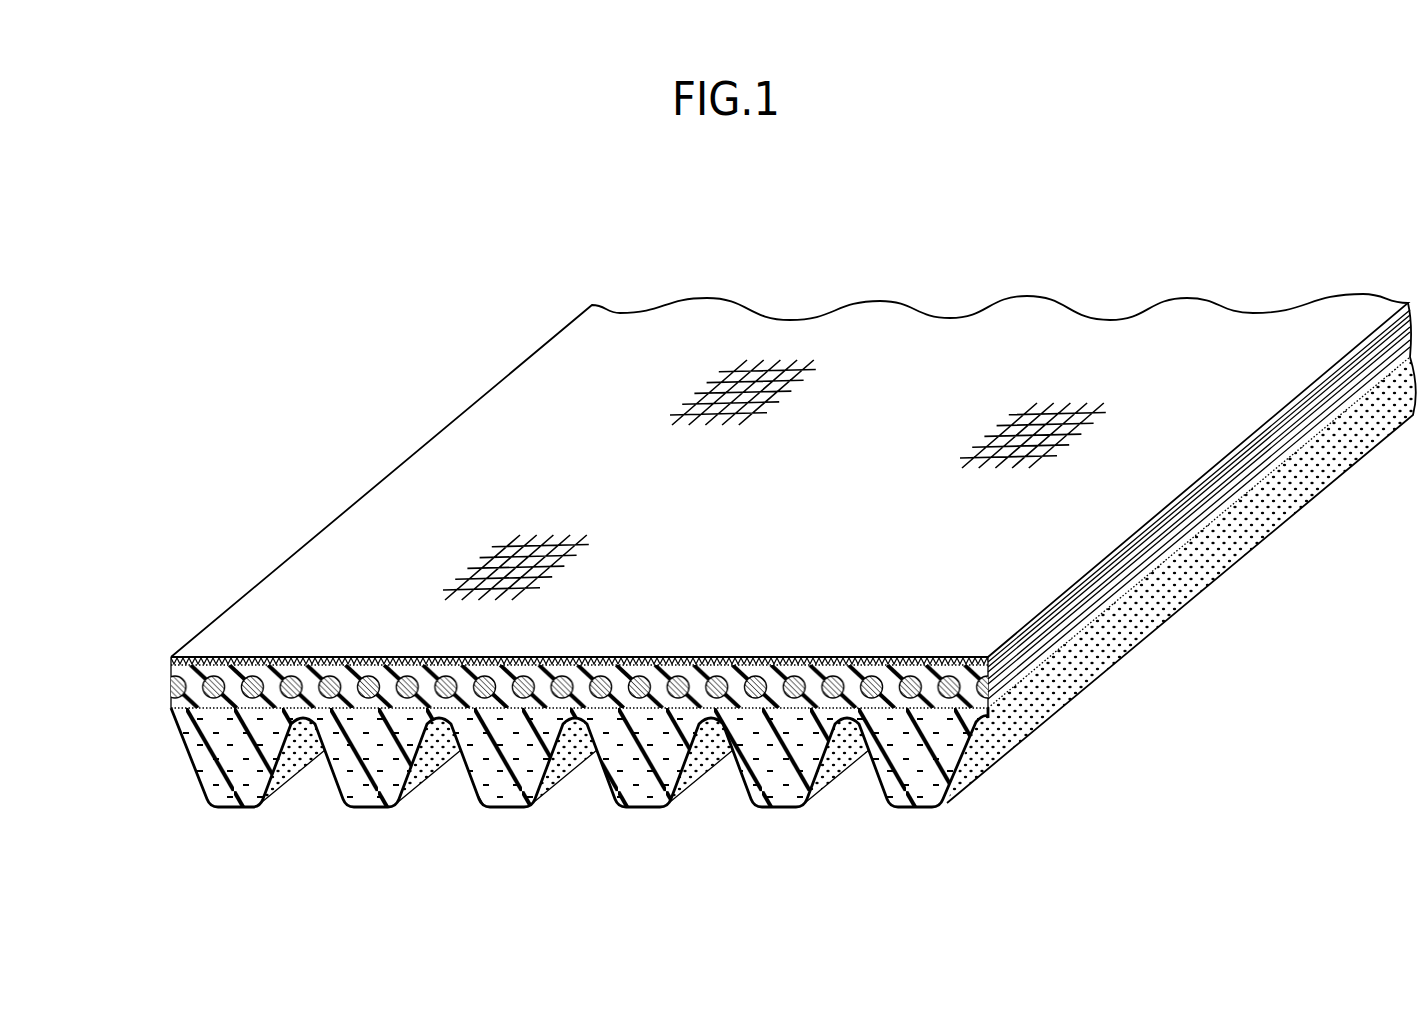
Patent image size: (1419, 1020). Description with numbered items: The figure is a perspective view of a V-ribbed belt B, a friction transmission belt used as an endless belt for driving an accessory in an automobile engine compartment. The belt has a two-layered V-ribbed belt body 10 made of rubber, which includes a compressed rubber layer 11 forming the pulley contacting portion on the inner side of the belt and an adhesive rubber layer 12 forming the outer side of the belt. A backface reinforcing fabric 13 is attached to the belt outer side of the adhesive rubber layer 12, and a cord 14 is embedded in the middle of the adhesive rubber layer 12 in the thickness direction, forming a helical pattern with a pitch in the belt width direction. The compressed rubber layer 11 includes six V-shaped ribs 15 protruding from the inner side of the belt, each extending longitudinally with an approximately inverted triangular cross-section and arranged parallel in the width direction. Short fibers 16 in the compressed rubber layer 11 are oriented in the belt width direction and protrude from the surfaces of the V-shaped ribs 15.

The V-ribbed belt B is at (603, 229).
The V-ribbed belt body 10 is at (108, 667).
The compressed rubber layer 11 is at (194, 751).
The adhesive rubber layer 12 is at (172, 701).
The backface reinforcing fabric 13 is at (641, 657).
The cord 14 is at (437, 663).
The V-shaped ribs 15 is at (249, 786).
The short fibers 16 is at (305, 772).